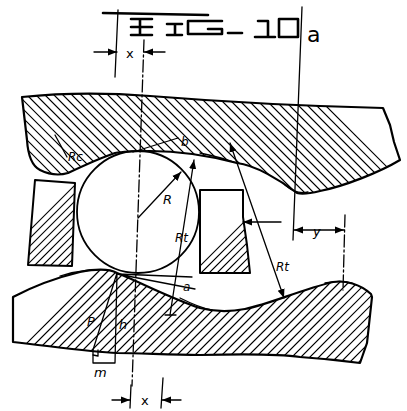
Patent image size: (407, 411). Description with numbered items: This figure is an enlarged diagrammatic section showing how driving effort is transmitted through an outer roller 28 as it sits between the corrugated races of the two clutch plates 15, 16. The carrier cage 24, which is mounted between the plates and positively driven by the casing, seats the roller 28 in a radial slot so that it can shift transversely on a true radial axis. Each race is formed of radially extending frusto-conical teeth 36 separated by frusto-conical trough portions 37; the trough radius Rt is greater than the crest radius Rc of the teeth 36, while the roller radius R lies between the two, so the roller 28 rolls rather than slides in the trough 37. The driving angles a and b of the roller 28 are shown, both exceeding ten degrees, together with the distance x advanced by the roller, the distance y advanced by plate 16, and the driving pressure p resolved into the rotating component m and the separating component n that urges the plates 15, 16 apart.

The clutch plate 15 is at (360, 335).
The clutch plate 16 is at (337, 125).
The carrier cage 24 is at (244, 274).
The frusto-conical roller 28 is at (122, 199).
The tooth 36 is at (302, 192).
The trough portion 37 is at (229, 158).